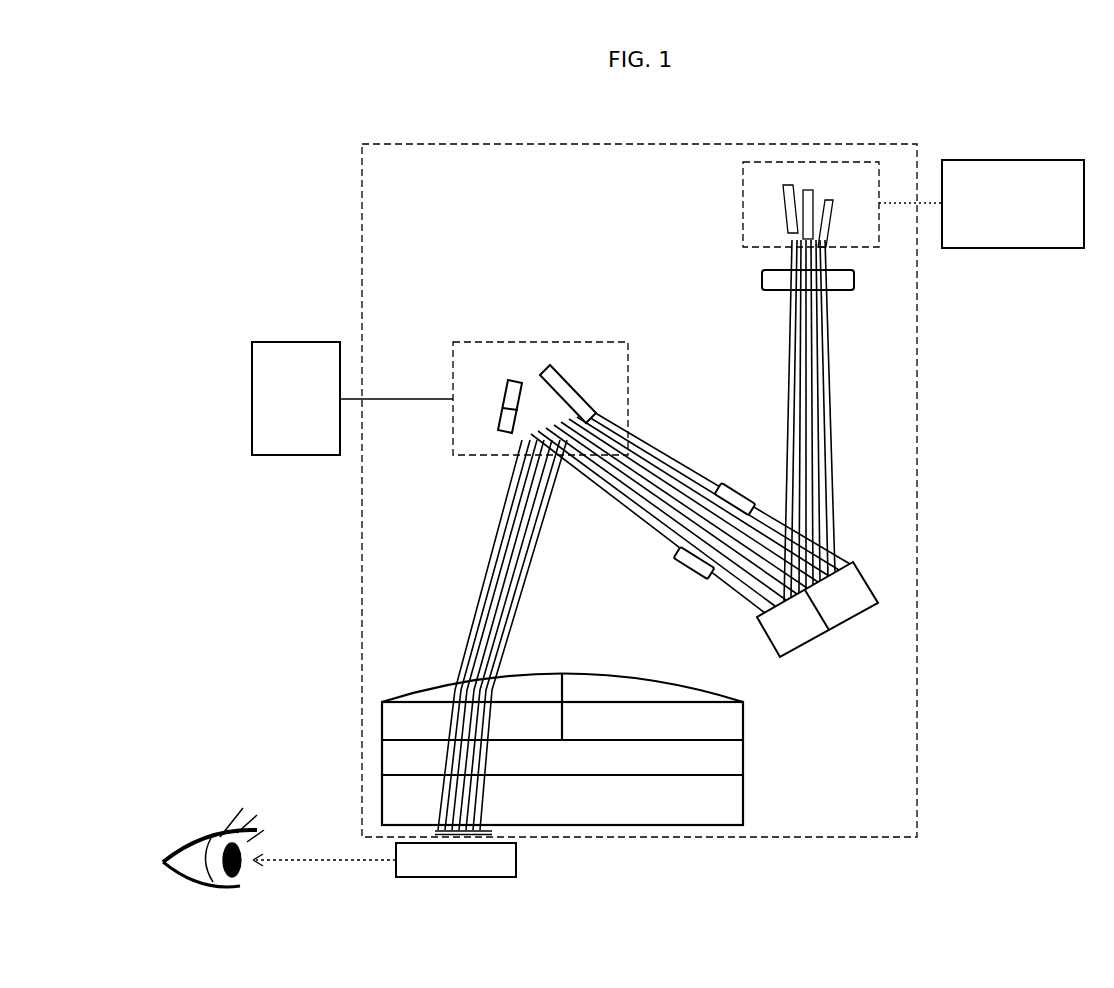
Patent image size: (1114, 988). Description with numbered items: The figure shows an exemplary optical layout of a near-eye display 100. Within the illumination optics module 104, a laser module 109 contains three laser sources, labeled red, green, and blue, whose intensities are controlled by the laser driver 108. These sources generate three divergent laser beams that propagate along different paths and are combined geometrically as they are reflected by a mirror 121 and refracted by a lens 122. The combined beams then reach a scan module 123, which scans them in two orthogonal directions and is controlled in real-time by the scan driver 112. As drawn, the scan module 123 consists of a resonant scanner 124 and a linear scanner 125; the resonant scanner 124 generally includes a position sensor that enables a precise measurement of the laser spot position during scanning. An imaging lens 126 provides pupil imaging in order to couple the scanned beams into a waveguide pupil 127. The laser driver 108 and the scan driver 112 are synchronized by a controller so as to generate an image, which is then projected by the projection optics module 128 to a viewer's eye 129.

The near-eye display 100 is at (275, 126).
The illumination optics module 104 is at (362, 243).
The laser driver 108 is at (1031, 224).
The laser module 109 is at (743, 196).
The scan driver 112 is at (314, 411).
The mirror 121 is at (852, 565).
The lens 122 is at (736, 482).
The scan module 123 is at (462, 342).
The resonant scanner 124 is at (505, 400).
The linear scanner 125 is at (582, 395).
The imaging lens 126 is at (745, 705).
The waveguide pupil 127 is at (485, 824).
The projection optics module 128 is at (474, 872).
The viewer's eye 129 is at (190, 842).